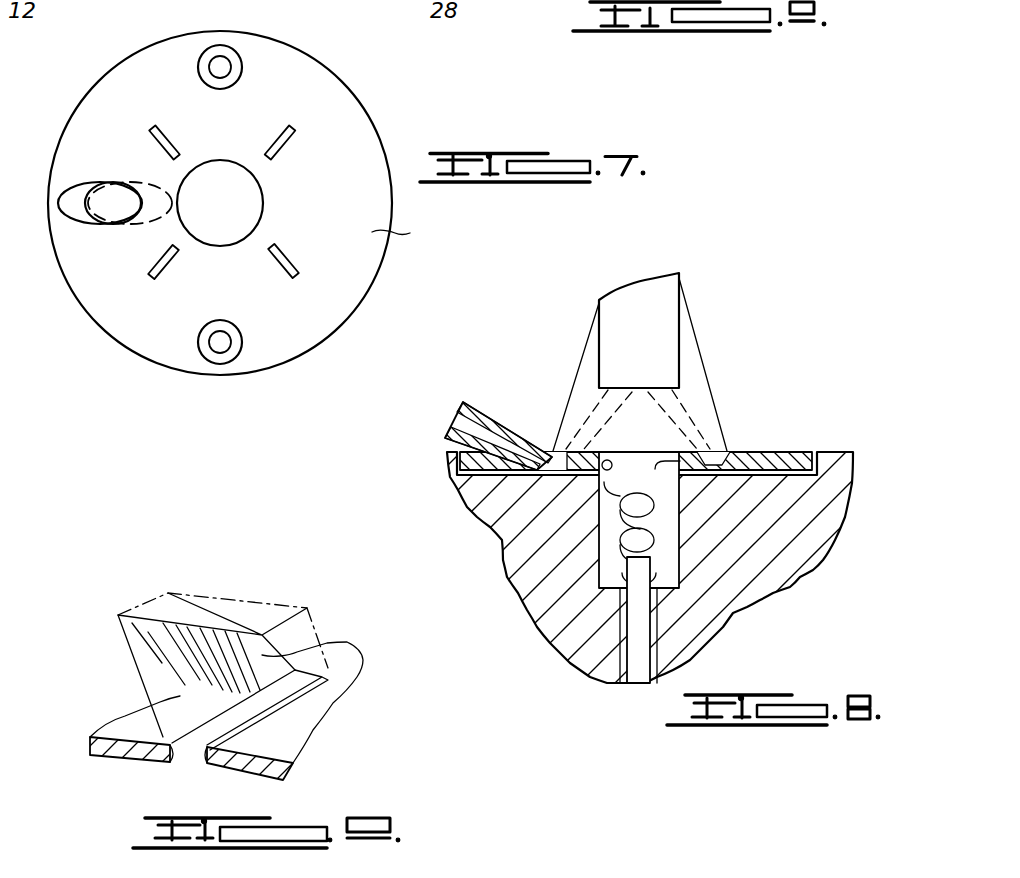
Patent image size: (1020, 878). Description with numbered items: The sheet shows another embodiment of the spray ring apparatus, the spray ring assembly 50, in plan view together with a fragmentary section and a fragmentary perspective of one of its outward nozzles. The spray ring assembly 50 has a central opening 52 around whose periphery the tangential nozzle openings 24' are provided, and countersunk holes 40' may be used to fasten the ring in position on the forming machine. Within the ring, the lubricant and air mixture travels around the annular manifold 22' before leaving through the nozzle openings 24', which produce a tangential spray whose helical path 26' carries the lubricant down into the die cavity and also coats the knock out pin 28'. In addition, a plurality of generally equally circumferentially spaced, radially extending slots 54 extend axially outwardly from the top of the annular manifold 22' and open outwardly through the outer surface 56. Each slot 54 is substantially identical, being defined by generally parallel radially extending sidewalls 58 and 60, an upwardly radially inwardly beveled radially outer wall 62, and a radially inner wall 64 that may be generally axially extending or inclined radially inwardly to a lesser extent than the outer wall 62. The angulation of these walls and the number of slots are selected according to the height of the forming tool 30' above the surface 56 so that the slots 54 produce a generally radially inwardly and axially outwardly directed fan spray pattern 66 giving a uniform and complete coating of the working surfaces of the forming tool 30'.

In FIG. 7, the spray ring assembly 50 is at (397, 125).
In FIG. 8, the spray ring assembly 50 is at (742, 376).
In FIG. 7, the central opening 52 is at (218, 164).
In FIG. 8, the central opening 52 is at (628, 458).
In FIG. 7, the radially extending slots 54 is at (153, 143).
In FIG. 9, the radially extending slots 54 is at (265, 690).
In FIG. 7, the outer surface 56 is at (406, 235).
In FIG. 8, the outer surface 56 is at (800, 452).
In FIG. 9, the outer surface 56 is at (300, 733).
In FIG. 7, the radially inner wall 64 is at (240, 280).
In FIG. 7, the countersunk holes 40' is at (255, 211).
In FIG. 8, the forming tool 30' is at (640, 354).
In FIG. 8, the fan spray pattern 66 is at (565, 398).
In FIG. 9, the fan spray pattern 66 is at (132, 658).
In FIG. 8, the annular manifold 22' is at (643, 459).
In FIG. 8, the tangential nozzle openings 24' is at (604, 522).
In FIG. 8, the helical path 26' is at (590, 620).
In FIG. 8, the knock out pin 28' is at (597, 654).
In FIG. 9, the radially outer wall 62 is at (328, 680).
In FIG. 9, the sidewall 58 is at (180, 762).
In FIG. 9, the sidewall 60 is at (197, 763).